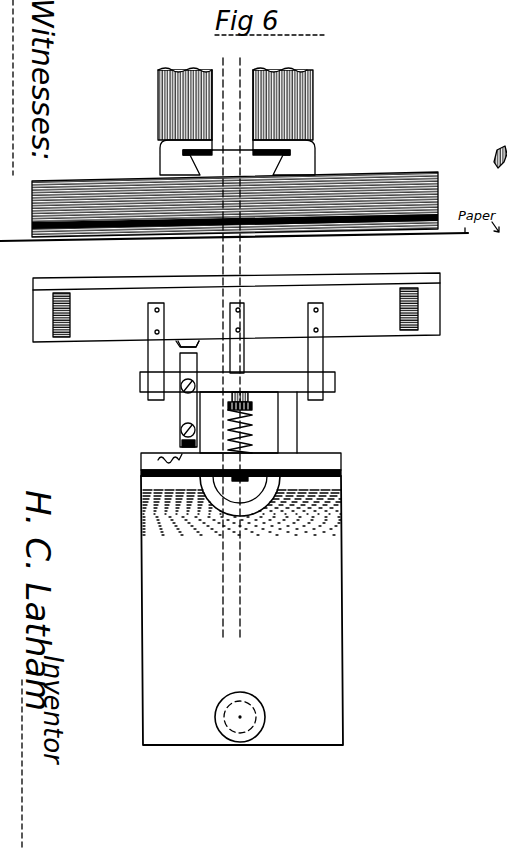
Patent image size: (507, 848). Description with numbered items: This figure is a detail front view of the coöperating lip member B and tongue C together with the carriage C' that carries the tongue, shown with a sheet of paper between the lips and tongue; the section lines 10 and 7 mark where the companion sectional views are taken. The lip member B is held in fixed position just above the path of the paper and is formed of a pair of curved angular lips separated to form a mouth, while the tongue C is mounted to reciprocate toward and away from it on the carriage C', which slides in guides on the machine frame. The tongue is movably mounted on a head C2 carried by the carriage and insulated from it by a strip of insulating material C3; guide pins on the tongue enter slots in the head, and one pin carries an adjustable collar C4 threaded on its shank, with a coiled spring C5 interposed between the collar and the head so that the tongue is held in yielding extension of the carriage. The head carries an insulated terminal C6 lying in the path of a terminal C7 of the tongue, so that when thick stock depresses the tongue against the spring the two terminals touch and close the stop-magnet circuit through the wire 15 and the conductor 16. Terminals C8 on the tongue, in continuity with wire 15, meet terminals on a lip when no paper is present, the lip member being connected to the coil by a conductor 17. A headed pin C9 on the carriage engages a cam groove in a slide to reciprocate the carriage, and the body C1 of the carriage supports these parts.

The section line 10 is at (220, 617).
The section line 7 is at (239, 351).
The conductor 17 is at (103, 183).
The lip member B is at (375, 182).
The tongue C is at (236, 310).
The terminals of the tongue C8 is at (53, 313).
The carriage C' is at (239, 351).
The terminal of the tongue C7 is at (196, 344).
The head C2 is at (275, 378).
The insulated terminal C6 is at (183, 408).
The adjustable collar C4 is at (252, 404).
The coiled spring C5 is at (252, 431).
The wire 15 is at (300, 423).
The conductor 16 is at (165, 460).
The strip of insulating material C3 is at (341, 469).
The block C1 is at (325, 538).
The headed pin C9 is at (240, 725).